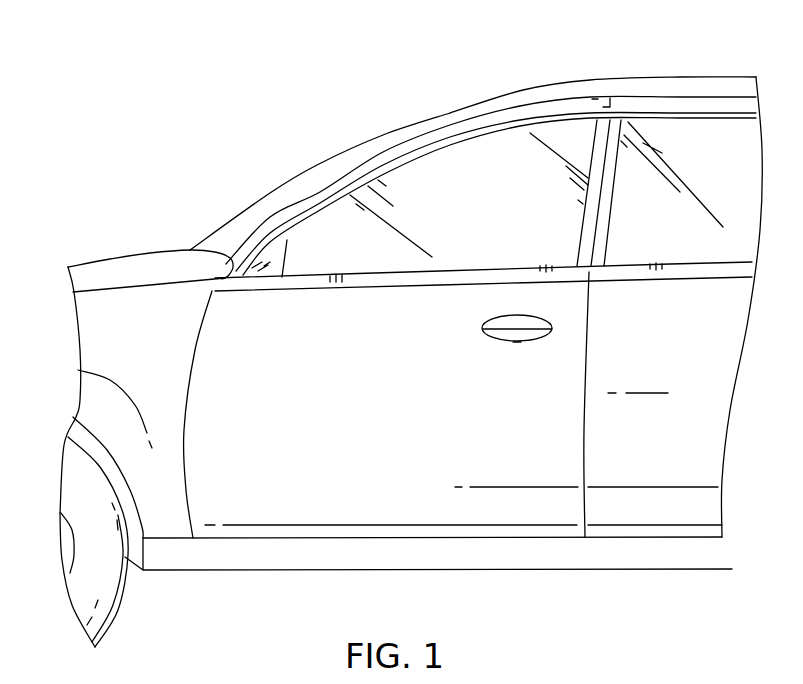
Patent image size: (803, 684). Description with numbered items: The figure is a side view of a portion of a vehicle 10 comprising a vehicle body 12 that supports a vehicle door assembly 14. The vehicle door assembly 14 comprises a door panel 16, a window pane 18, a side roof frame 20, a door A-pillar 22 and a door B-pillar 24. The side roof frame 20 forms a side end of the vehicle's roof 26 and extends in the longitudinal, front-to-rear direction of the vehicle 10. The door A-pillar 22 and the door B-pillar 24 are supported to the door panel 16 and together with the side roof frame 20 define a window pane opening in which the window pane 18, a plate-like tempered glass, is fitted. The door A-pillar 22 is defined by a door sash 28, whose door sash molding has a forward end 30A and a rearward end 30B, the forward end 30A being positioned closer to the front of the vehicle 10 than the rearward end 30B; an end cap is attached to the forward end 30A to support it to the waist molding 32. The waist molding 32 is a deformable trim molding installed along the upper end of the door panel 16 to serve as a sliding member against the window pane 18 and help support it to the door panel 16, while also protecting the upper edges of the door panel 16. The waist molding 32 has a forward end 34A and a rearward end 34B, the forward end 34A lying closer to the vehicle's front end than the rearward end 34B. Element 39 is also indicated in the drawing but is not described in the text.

The vehicle 10 is at (108, 132).
The vehicle body 12 is at (111, 252).
The vehicle door assembly 14 is at (247, 184).
The door panel 16 is at (543, 370).
The window pane 18 is at (398, 252).
The side roof frame 20 is at (523, 88).
The door A-pillar 22 is at (320, 198).
The door B-pillar 24 is at (592, 198).
The roof 26 is at (686, 68).
The door sash 28 is at (390, 168).
The forward end 30A is at (237, 260).
The rearward end 30B is at (603, 107).
The waist molding 32 is at (304, 285).
The forward end 34A is at (218, 289).
The rearward end 34B is at (577, 277).
The window frame corner 39 is at (283, 262).